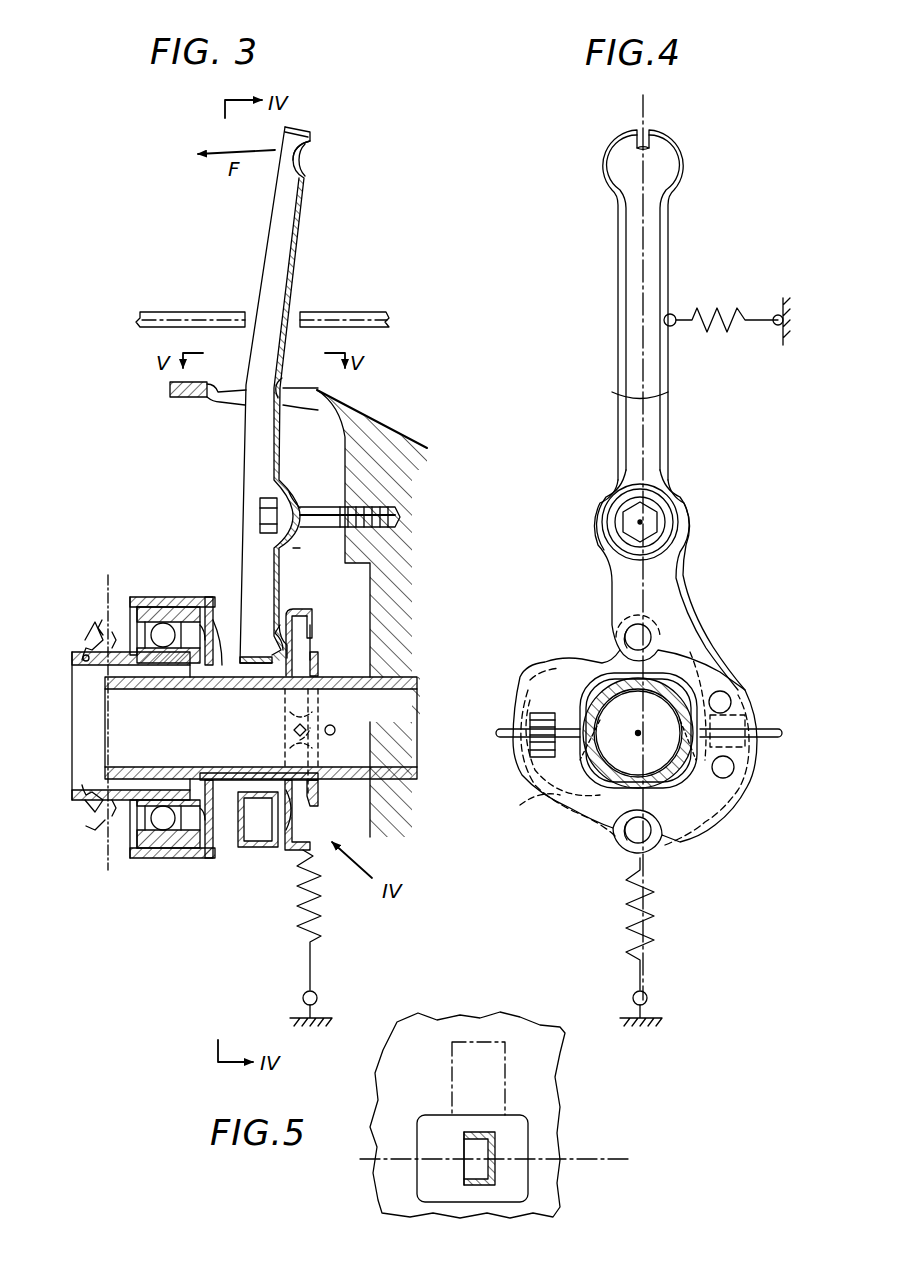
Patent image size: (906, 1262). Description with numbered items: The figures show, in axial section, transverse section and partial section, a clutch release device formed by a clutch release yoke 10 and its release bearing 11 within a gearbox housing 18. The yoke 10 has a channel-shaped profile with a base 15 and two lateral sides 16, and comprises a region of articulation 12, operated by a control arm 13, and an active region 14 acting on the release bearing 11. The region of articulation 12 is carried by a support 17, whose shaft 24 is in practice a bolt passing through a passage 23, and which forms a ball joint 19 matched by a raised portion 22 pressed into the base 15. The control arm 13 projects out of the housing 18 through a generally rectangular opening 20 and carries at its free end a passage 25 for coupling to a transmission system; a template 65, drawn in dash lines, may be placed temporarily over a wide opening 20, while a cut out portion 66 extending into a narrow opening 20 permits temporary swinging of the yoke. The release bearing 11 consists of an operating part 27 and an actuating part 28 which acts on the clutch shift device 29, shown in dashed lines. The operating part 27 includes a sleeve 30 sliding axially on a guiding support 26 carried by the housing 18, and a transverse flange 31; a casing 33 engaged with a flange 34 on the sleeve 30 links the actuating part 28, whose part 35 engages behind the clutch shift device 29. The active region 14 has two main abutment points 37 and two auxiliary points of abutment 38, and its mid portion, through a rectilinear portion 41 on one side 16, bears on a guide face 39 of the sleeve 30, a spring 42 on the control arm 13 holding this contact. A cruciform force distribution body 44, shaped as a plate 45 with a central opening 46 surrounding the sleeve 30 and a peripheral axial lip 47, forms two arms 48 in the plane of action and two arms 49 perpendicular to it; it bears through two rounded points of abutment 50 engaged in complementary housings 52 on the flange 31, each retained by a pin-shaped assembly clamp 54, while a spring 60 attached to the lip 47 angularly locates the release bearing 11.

In FIG. 3, the clutch release yoke 10 is at (220, 548).
In FIG. 4, the clutch release yoke 10 is at (722, 600).
In FIG. 5, the clutch release yoke 10 is at (508, 1168).
In FIG. 3, the release bearing 11 is at (150, 590).
In FIG. 3, the region of articulation 12 is at (292, 478).
In FIG. 4, the region of articulation 12 is at (672, 482).
In FIG. 3, the control arm 13 is at (288, 302).
In FIG. 4, the control arm 13 is at (618, 262).
In FIG. 5, the control arm 13 is at (480, 1132).
In FIG. 3, the active region 14 is at (292, 618).
In FIG. 4, the active region 14 is at (726, 822).
In FIG. 3, the base 15 is at (297, 385).
In FIG. 4, the base 15 is at (672, 604).
In FIG. 5, the base 15 is at (496, 1148).
In FIG. 4, the lateral sides 16 is at (620, 395).
In FIG. 5, the lateral sides 16 is at (468, 1136).
In FIG. 3, the support 17 is at (256, 515).
In FIG. 4, the support 17 is at (630, 530).
In FIG. 3, the housing 18 is at (400, 433).
In FIG. 4, the housing 18 is at (778, 334).
In FIG. 5, the housing 18 is at (562, 1115).
In FIG. 3, the ball joint 19 is at (275, 500).
In FIG. 4, the ball joint 19 is at (626, 518).
In FIG. 3, the opening 20 is at (212, 400).
In FIG. 5, the opening 20 is at (440, 1118).
In FIG. 3, the raised portion 22 is at (300, 545).
In FIG. 4, the raised portion 22 is at (620, 505).
In FIG. 3, the passage 23 is at (302, 512).
In FIG. 3, the shaft 24 is at (330, 530).
In FIG. 3, the passage 25 is at (300, 165).
In FIG. 4, the passage 25 is at (632, 172).
In FIG. 3, the guiding support 26 is at (76, 776).
In FIG. 4, the guiding support 26 is at (602, 776).
In FIG. 3, the operating part 27 is at (222, 832).
In FIG. 4, the operating part 27 is at (604, 790).
In FIG. 3, the actuating part 28 is at (68, 655).
In FIG. 3, the clutch shift device 29 is at (108, 572).
In FIG. 3, the sleeve 30 is at (218, 790).
In FIG. 4, the sleeve 30 is at (666, 778).
In FIG. 3, the flange 31 is at (314, 796).
In FIG. 4, the flange 31 is at (530, 798).
In FIG. 3, the casing 33 is at (170, 600).
In FIG. 3, the flange 34 is at (214, 612).
In FIG. 3, the part 35 is at (95, 618).
In FIG. 3, the main abutment points 37 is at (277, 634).
In FIG. 4, the main abutment points 37 is at (632, 636).
In FIG. 4, the auxiliary points of abutment 38 is at (724, 697).
In FIG. 4, the guide face 39 is at (600, 748).
In FIG. 4, the rectilinear portion 41 is at (694, 696).
In FIG. 4, the spring 42 is at (728, 300).
In FIG. 3, the force distribution body 44 is at (284, 852).
In FIG. 4, the force distribution body 44 is at (548, 665).
In FIG. 3, the plate 45 is at (312, 644).
In FIG. 4, the plate 45 is at (560, 708).
In FIG. 3, the opening 46 is at (286, 686).
In FIG. 4, the opening 46 is at (598, 682).
In FIG. 3, the axial lip 47 is at (313, 627).
In FIG. 3, the arms 48 is at (312, 856).
In FIG. 4, the arms 48 is at (618, 645).
In FIG. 4, the arms 49 is at (522, 704).
In FIG. 3, the points of abutment 50 is at (320, 742).
In FIG. 3, the complementary housing 52 is at (322, 716).
In FIG. 3, the assembly clamp 54 is at (338, 730).
In FIG. 4, the assembly clamp 54 is at (505, 743).
In FIG. 3, the spring 60 is at (292, 918).
In FIG. 4, the spring 60 is at (664, 918).
In FIG. 3, the template 65 is at (177, 307).
In FIG. 5, the cut out portion 66 is at (512, 1048).